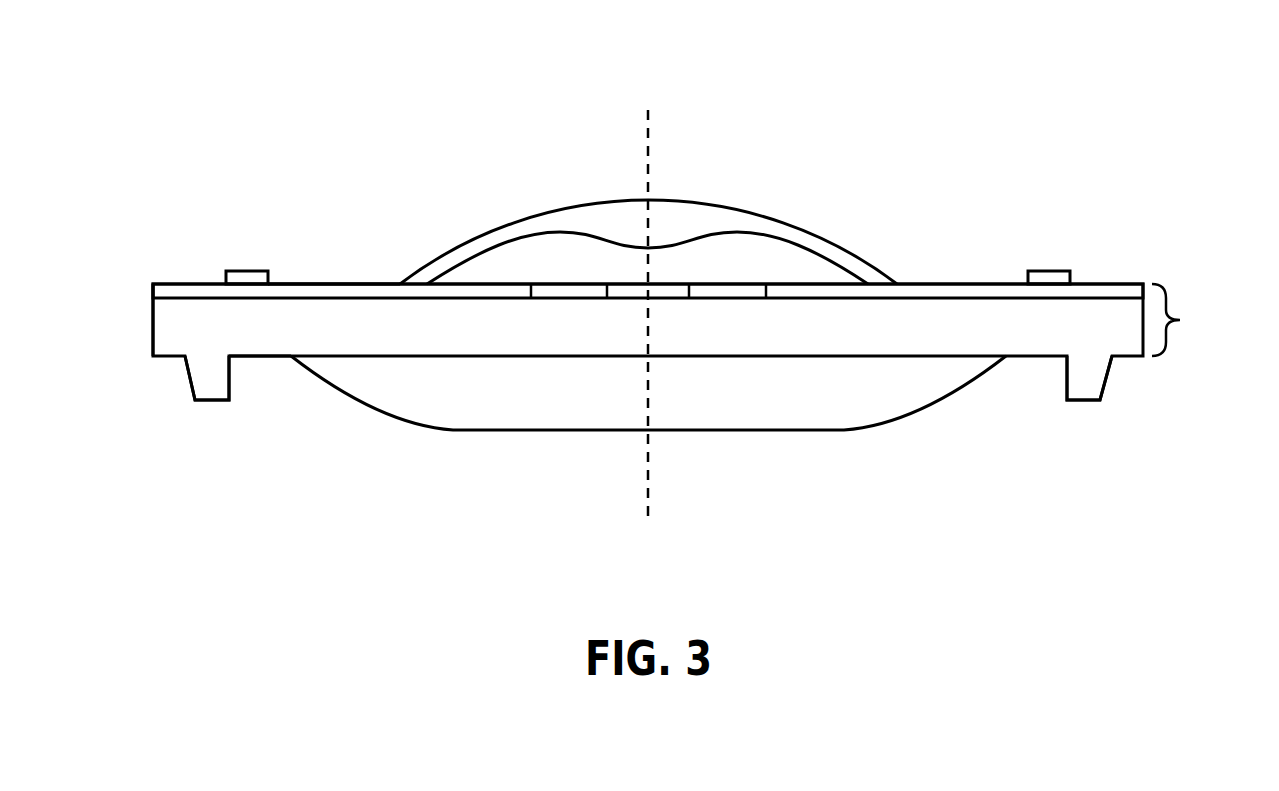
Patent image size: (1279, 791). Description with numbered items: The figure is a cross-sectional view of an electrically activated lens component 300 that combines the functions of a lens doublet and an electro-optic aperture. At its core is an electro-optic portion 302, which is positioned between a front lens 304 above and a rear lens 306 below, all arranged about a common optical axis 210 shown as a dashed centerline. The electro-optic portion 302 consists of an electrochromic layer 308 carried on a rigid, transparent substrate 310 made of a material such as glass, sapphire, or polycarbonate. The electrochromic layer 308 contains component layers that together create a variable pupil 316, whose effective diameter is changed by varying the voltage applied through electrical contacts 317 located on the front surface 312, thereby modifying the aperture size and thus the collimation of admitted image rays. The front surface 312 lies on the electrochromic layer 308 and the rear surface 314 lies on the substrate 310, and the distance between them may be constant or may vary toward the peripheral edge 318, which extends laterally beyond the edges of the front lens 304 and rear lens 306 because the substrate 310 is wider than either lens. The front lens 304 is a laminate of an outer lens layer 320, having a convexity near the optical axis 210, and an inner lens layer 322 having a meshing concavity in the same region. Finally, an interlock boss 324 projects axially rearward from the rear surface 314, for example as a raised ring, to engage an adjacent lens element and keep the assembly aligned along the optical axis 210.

The electrically activated lens component 300 is at (937, 66).
The optical axis 210 is at (650, 133).
The electro-optic portion 302 is at (1191, 320).
The front lens 304 is at (667, 212).
The rear lens 306 is at (828, 432).
The electrochromic layer 308 is at (1092, 287).
The substrate 310 is at (1097, 333).
The front surface 312 is at (320, 283).
The rear surface 314 is at (258, 358).
The variable pupil 316 is at (567, 284).
The electrical contacts 317 is at (242, 270).
The peripheral edge 318 is at (153, 318).
The outer lens layer 320 is at (528, 218).
The inner lens layer 322 is at (743, 257).
The interlock boss 324 is at (210, 390).